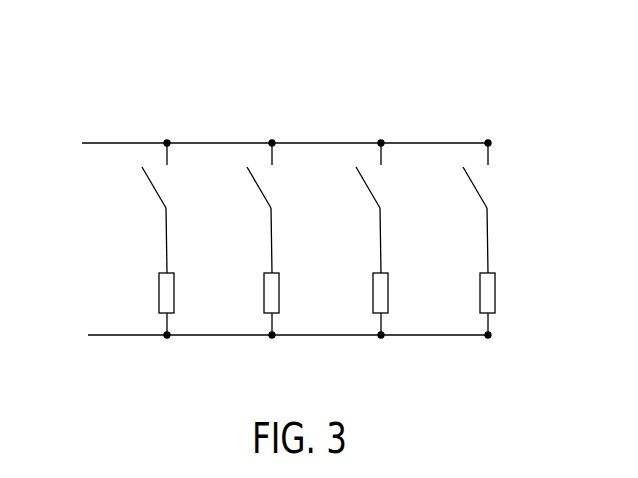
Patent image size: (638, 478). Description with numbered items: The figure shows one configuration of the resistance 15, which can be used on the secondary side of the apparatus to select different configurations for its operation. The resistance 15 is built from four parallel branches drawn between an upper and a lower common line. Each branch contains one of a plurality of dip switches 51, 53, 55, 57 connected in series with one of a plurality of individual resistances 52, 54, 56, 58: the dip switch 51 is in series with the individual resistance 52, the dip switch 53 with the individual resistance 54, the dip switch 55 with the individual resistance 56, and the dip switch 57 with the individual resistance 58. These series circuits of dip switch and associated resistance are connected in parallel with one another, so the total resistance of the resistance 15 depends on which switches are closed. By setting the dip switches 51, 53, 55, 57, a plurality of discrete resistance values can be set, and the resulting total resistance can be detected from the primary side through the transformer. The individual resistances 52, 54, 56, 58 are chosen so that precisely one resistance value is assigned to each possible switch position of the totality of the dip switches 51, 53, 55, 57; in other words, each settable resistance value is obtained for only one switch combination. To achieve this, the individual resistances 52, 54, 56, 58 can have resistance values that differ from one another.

The resistance 15 is at (84, 102).
The dip switch 51 is at (152, 190).
The individual resistance 52 is at (159, 293).
The dip switch 53 is at (256, 190).
The individual resistance 54 is at (264, 293).
The dip switch 55 is at (366, 190).
The individual resistance 56 is at (373, 293).
The dip switch 57 is at (473, 190).
The individual resistance 58 is at (480, 293).